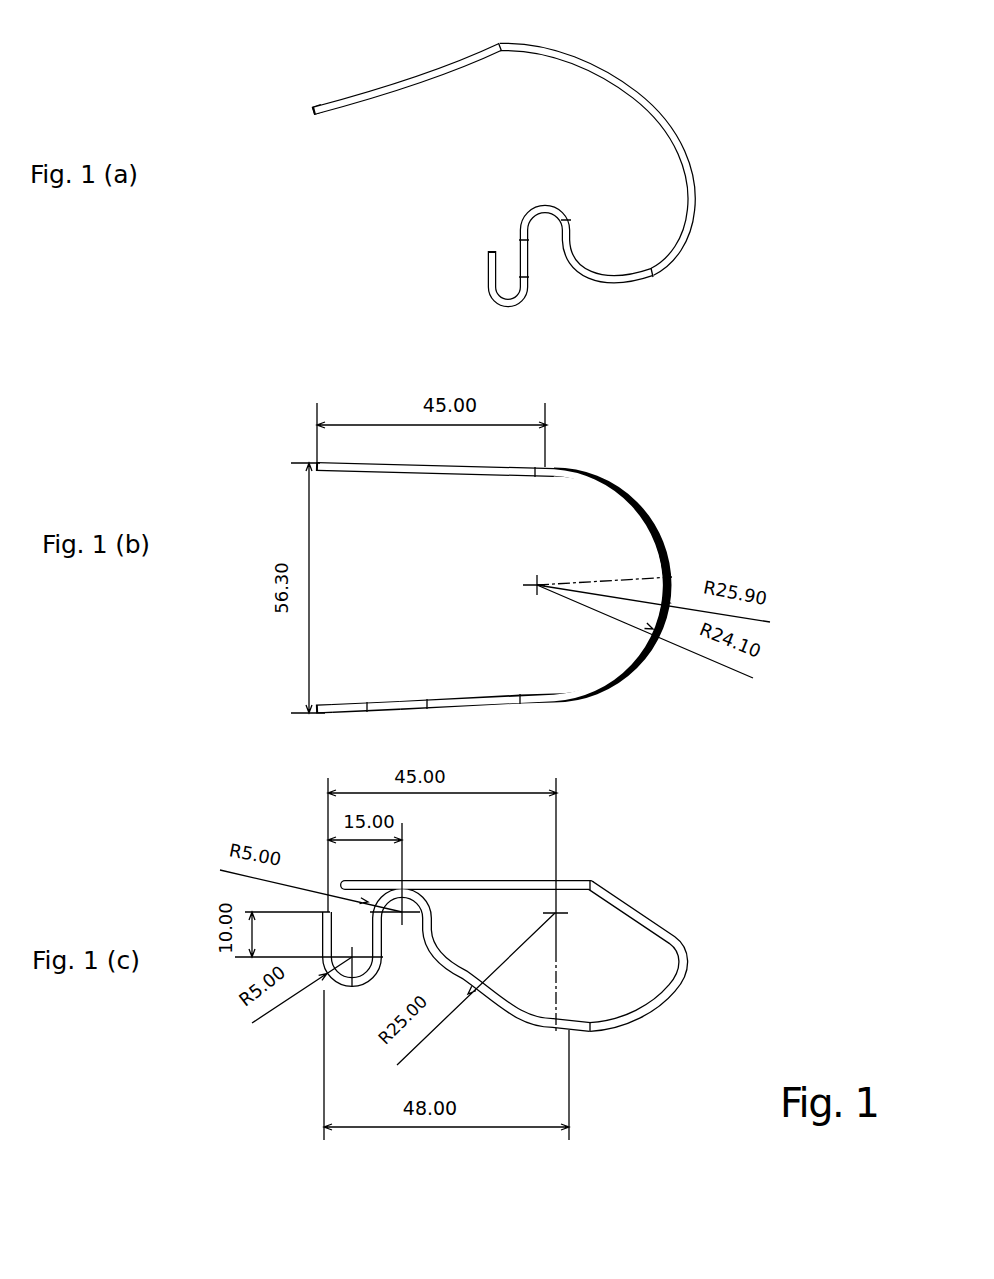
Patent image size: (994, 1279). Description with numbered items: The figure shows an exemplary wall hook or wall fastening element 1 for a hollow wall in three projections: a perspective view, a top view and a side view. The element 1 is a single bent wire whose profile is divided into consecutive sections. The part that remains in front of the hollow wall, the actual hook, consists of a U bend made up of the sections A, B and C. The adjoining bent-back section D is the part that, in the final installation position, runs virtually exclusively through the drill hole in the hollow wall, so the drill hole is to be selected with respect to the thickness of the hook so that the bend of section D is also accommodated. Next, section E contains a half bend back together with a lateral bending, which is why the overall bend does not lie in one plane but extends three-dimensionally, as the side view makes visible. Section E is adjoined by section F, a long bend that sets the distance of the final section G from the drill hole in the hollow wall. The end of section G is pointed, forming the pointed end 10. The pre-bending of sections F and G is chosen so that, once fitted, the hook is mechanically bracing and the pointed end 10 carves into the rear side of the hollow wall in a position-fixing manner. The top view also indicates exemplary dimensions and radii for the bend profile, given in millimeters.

The wall hook or wall fastening element 1 is at (302, 53).
The pointed end 10 is at (321, 114).
The section A is at (484, 270).
The section B is at (513, 303).
The section C is at (520, 247).
The bent-back section D is at (553, 206).
The section E is at (608, 281).
The section F is at (650, 103).
The final section G is at (422, 84).